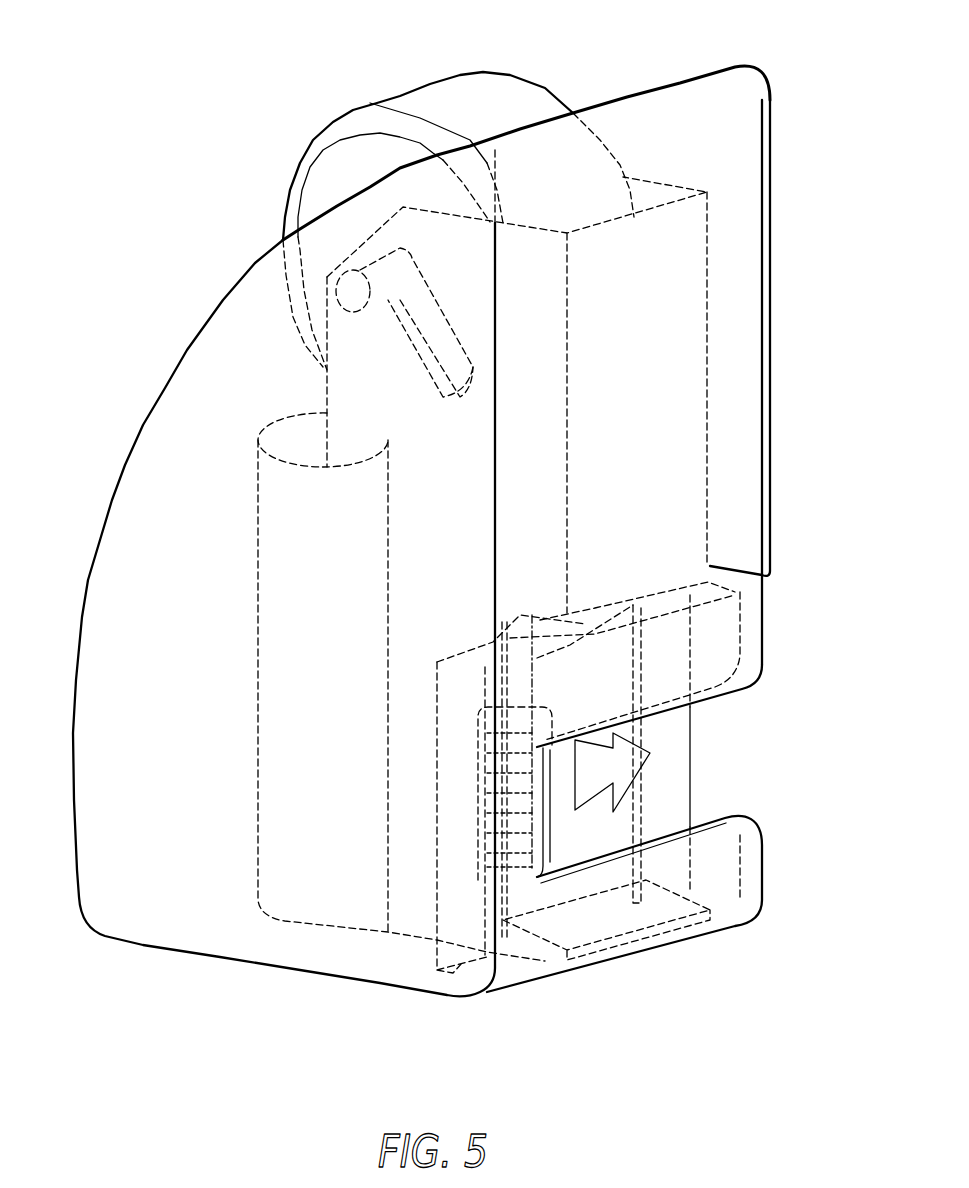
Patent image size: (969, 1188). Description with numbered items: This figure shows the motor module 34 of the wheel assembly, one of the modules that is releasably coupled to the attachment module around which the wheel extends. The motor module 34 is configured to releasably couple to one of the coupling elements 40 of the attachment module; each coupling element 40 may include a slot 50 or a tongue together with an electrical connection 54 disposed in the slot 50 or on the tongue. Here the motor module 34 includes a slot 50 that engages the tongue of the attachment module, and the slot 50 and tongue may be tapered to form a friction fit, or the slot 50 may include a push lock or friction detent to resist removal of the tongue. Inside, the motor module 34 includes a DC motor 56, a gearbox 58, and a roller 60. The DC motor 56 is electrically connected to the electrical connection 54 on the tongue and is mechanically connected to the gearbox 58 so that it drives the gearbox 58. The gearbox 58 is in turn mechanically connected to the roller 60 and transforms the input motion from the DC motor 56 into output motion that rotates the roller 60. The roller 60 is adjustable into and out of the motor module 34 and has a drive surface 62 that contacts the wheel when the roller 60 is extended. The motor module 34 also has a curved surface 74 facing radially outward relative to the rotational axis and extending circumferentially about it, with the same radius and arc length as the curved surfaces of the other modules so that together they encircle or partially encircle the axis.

The motor module 34 is at (117, 117).
The coupling element 40 is at (693, 750).
The slot 50 is at (693, 790).
The electrical connection 54 is at (480, 842).
The DC motor 56 is at (260, 872).
The gearbox 58 is at (770, 318).
The roller 60 is at (540, 83).
The drive surface 62 is at (430, 82).
The curved surface 74 is at (153, 400).